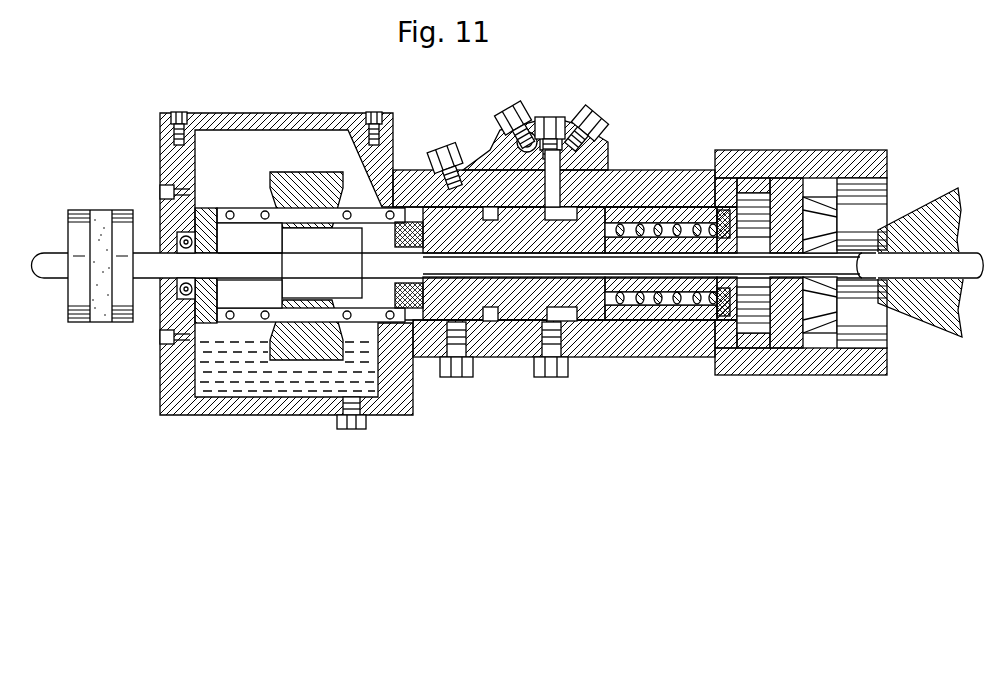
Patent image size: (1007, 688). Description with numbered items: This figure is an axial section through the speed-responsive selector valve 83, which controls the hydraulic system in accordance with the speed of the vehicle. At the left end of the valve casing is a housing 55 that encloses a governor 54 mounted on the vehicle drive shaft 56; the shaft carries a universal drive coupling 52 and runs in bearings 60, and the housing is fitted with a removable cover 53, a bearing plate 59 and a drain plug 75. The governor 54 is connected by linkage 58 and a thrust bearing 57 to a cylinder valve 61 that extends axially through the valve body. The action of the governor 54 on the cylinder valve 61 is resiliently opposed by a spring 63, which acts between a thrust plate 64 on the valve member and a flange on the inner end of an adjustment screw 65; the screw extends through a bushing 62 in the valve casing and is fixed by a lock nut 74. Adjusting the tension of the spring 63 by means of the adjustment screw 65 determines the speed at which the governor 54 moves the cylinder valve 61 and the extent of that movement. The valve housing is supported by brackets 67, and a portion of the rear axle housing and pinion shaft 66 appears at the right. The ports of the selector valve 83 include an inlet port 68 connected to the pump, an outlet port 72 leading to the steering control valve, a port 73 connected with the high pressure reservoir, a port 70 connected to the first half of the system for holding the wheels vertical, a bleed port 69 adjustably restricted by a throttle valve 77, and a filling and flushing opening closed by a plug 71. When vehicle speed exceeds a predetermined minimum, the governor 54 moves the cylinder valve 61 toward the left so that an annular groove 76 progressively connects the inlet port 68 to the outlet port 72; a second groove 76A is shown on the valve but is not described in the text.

The universal drive coupling 52 is at (98, 210).
The removable cover 53 is at (262, 113).
The governor 54 is at (314, 182).
The housing 55 is at (246, 176).
The vehicle drive shaft 56 is at (328, 271).
The thrust bearing 57 is at (395, 230).
The linkage 58 is at (257, 216).
The bearing plate 59 is at (165, 320).
The bearings 60 is at (183, 248).
The cylinder valve 61 is at (530, 287).
The bushing 62 is at (817, 204).
The spring 63 is at (680, 226).
The thrust plate 64 is at (731, 300).
The adjustment screw 65 is at (840, 283).
The rear axle housing and pinion shaft 66 is at (942, 323).
The brackets 67 is at (843, 150).
The inlet port 68 is at (443, 148).
The bleed port 69 is at (510, 113).
The port 70 is at (594, 110).
The plug 71 is at (548, 116).
The outlet port 72 is at (457, 373).
The port 73 is at (553, 373).
The lock nut 74 is at (807, 227).
The drain plug 75 is at (352, 429).
The annular groove 76 is at (489, 322).
The port 76A is at (563, 322).
The throttle valve 77 is at (530, 167).
The selector valve 83 is at (667, 170).